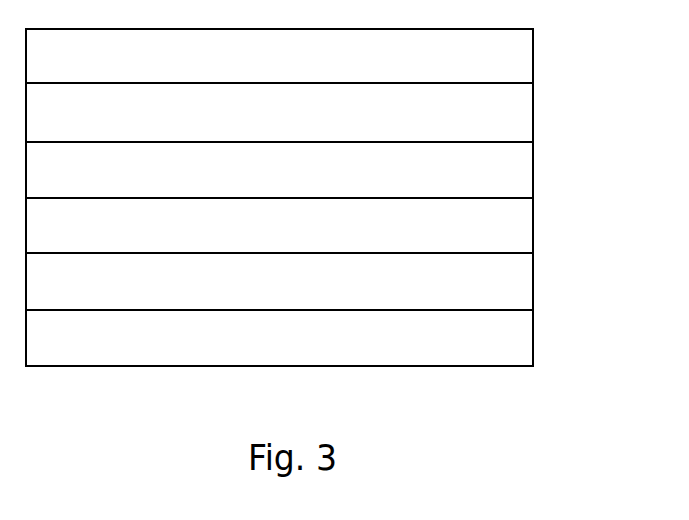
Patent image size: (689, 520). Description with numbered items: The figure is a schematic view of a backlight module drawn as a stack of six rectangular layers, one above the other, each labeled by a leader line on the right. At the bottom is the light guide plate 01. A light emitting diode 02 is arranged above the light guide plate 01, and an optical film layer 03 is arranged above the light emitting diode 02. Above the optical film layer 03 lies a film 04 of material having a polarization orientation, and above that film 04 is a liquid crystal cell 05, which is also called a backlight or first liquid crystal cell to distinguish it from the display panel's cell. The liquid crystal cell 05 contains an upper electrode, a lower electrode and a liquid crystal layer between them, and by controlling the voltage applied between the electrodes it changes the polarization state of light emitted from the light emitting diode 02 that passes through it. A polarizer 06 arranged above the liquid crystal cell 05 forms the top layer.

The light guide plate 01 is at (533, 338).
The light emitting diode 02 is at (533, 282).
The optical film layer 03 is at (533, 226).
The film of material with a polarization orientation 04 is at (533, 169).
The liquid crystal cell 05 is at (533, 113).
The polarizer 06 is at (533, 57).